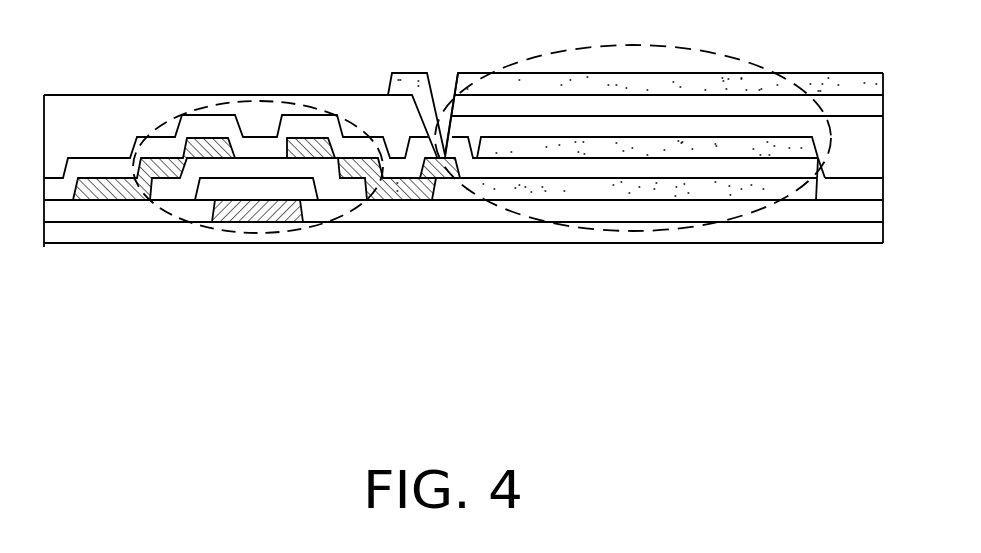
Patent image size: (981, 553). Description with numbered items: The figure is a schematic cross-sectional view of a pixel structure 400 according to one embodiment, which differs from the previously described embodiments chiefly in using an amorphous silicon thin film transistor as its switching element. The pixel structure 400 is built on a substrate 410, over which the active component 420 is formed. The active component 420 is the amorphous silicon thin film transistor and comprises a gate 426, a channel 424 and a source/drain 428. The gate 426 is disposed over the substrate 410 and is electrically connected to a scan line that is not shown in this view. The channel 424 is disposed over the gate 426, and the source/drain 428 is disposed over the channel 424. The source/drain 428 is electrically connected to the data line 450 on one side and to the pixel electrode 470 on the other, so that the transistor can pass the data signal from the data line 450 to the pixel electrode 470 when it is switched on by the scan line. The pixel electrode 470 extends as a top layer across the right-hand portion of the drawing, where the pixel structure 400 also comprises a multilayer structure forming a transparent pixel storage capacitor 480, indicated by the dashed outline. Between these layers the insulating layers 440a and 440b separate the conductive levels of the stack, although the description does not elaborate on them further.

The pixel structure 400 is at (877, 383).
The substrate 410 is at (813, 228).
The active component 420 is at (374, 212).
The channel 424 is at (282, 167).
The gate 426 is at (253, 212).
The source/drain 428 is at (178, 180).
The first insulating layer 440a is at (710, 187).
The second insulating layer 440b is at (647, 147).
The data line 450 is at (105, 198).
The pixel electrode 470 is at (513, 82).
The transparent pixel storage capacitor 480 is at (577, 232).